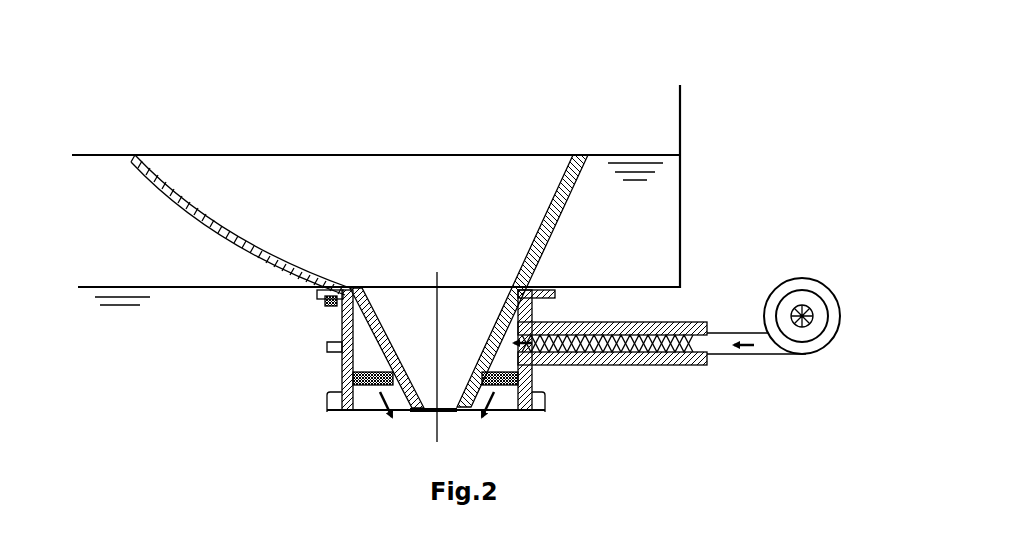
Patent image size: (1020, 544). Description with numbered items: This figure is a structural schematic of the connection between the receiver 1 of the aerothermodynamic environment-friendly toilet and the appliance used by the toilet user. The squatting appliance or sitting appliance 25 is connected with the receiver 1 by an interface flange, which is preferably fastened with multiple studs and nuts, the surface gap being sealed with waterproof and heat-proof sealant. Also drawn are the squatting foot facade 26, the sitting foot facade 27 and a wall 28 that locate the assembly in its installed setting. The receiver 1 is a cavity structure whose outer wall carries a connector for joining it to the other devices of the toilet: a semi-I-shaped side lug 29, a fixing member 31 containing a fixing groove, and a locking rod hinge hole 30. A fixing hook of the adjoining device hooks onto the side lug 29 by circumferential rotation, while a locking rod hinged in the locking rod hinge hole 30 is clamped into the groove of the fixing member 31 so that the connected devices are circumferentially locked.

The receiver 1 is at (353, 330).
The squatting appliance or sitting appliance 25 is at (200, 207).
The squatting foot facade 26 is at (629, 152).
The sitting foot facade 27 is at (645, 285).
The wall 28 is at (683, 257).
The side lug 29 is at (353, 368).
The locking rod hinge hole 30 is at (333, 296).
The fixing member 31 is at (348, 290).